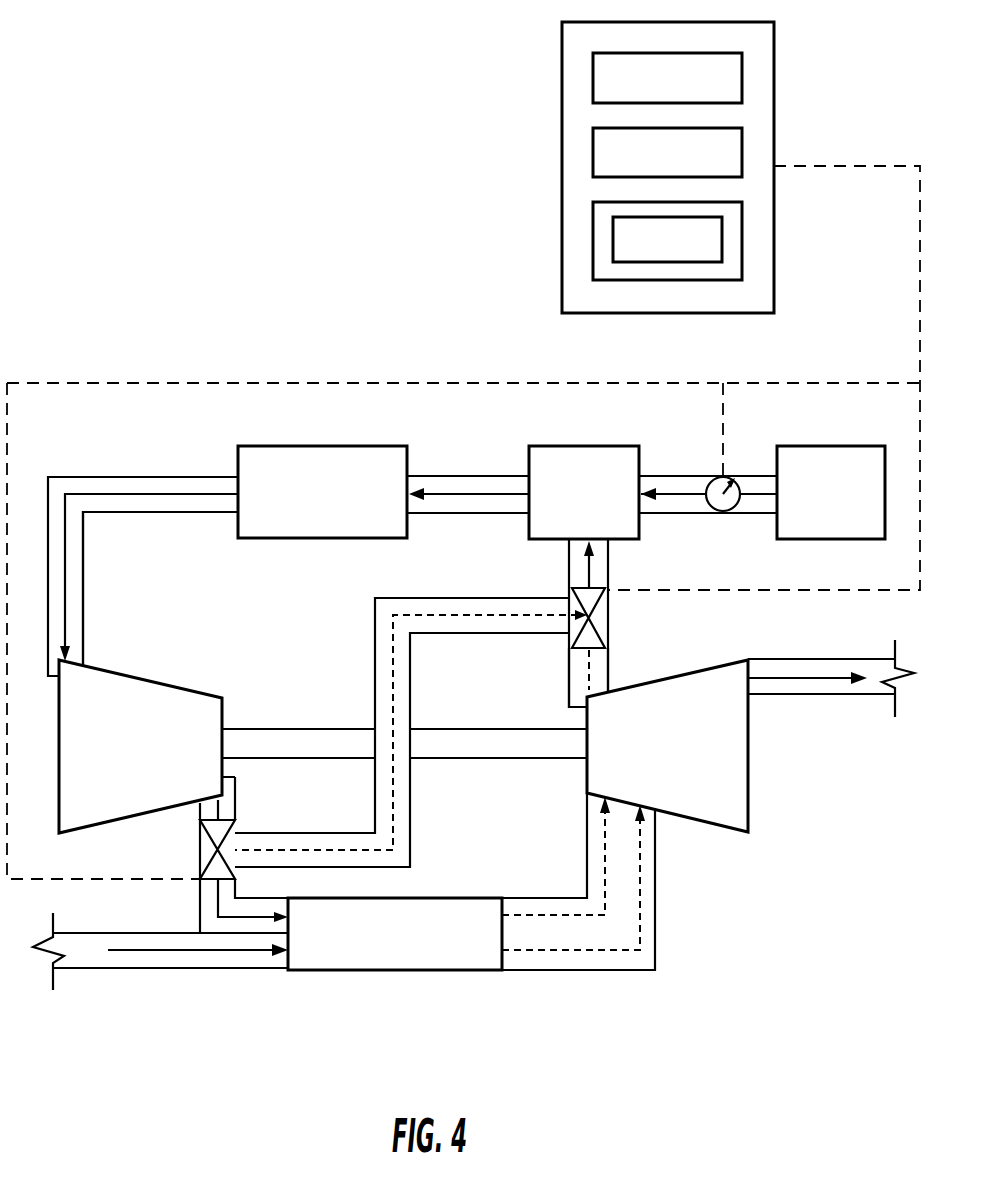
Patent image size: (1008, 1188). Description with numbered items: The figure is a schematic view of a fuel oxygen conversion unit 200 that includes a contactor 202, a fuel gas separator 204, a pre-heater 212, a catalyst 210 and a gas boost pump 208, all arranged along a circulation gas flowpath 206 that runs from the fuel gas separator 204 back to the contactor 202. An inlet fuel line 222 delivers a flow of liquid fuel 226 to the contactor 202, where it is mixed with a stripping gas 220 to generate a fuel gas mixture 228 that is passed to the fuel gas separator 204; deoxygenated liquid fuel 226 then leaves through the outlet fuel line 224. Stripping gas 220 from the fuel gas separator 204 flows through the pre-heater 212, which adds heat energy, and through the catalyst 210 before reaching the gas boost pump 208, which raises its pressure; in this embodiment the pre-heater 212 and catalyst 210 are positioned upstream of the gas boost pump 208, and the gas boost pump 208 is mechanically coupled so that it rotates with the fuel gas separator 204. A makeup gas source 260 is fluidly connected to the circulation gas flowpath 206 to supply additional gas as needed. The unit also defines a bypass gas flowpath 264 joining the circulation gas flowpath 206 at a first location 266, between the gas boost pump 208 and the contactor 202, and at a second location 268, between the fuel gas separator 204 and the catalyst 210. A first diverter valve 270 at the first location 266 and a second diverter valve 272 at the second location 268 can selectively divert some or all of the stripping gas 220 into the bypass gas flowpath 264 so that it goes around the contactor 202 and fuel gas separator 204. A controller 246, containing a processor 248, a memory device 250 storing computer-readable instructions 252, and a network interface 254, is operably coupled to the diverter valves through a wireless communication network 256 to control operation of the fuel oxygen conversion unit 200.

The fuel oxygen conversion unit 200 is at (216, 236).
The contactor 202 is at (410, 970).
The fuel gas separator 204 is at (750, 772).
The circulation gas flowpath 206 is at (146, 465).
The gas boost pump 208 is at (168, 682).
The catalyst 210 is at (313, 446).
The pre-heater 212 is at (607, 446).
The stripping gas 220 is at (118, 495).
The inlet fuel line 222 is at (140, 969).
The outlet fuel line 224 is at (809, 696).
The flow of liquid fuel 226 is at (188, 969).
The fuel gas mixture 228 is at (569, 964).
The controller 246 is at (562, 98).
The processor 248 is at (744, 150).
The memory device 250 is at (592, 222).
The computer-readable instructions 252 is at (613, 245).
The network interface 254 is at (744, 80).
The wireless communication network 256 is at (920, 302).
The makeup gas source 260 is at (851, 507).
The bypass gas flowpath 264 is at (410, 806).
The first location 266 is at (258, 815).
The second location 268 is at (547, 652).
The first diverter valve 270 is at (200, 830).
The second diverter valve 272 is at (575, 632).